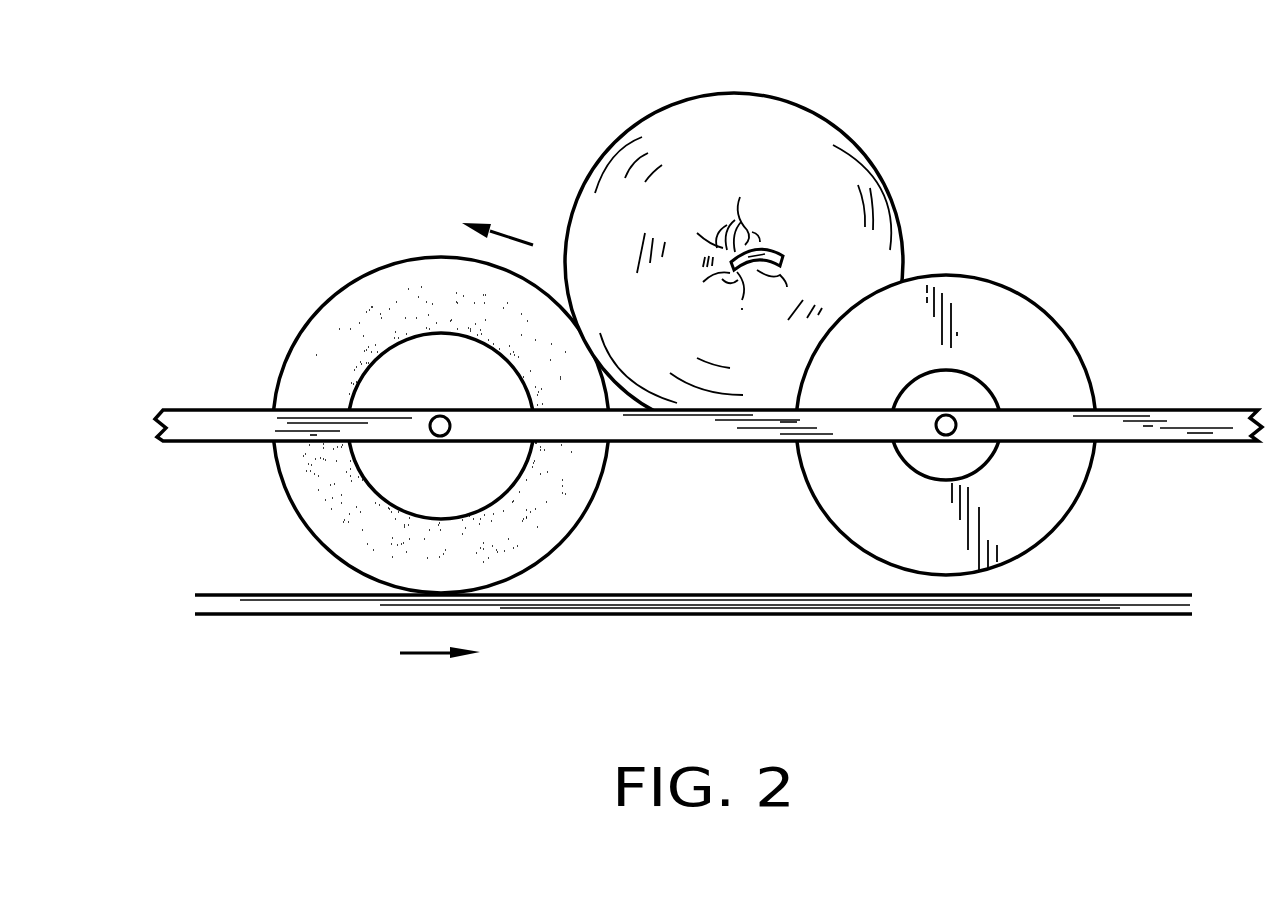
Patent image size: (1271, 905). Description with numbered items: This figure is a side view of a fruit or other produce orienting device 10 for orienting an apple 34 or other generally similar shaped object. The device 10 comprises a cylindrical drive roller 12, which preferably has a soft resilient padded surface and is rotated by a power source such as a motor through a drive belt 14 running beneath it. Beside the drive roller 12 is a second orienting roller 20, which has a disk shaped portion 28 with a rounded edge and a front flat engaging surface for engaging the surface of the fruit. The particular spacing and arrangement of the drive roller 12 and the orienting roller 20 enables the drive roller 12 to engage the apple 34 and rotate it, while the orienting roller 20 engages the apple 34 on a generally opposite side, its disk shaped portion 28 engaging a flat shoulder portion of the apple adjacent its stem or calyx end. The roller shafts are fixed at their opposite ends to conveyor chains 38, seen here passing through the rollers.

The fruit or other produce orienting device 10 is at (1096, 127).
The cylindrical drive roller 12 is at (353, 293).
The drive belt 14 is at (925, 607).
The second orienting roller 20 is at (1038, 302).
The disk shaped portion 28 is at (1047, 365).
The apple 34 is at (762, 122).
The conveyor chains 38 is at (227, 432).